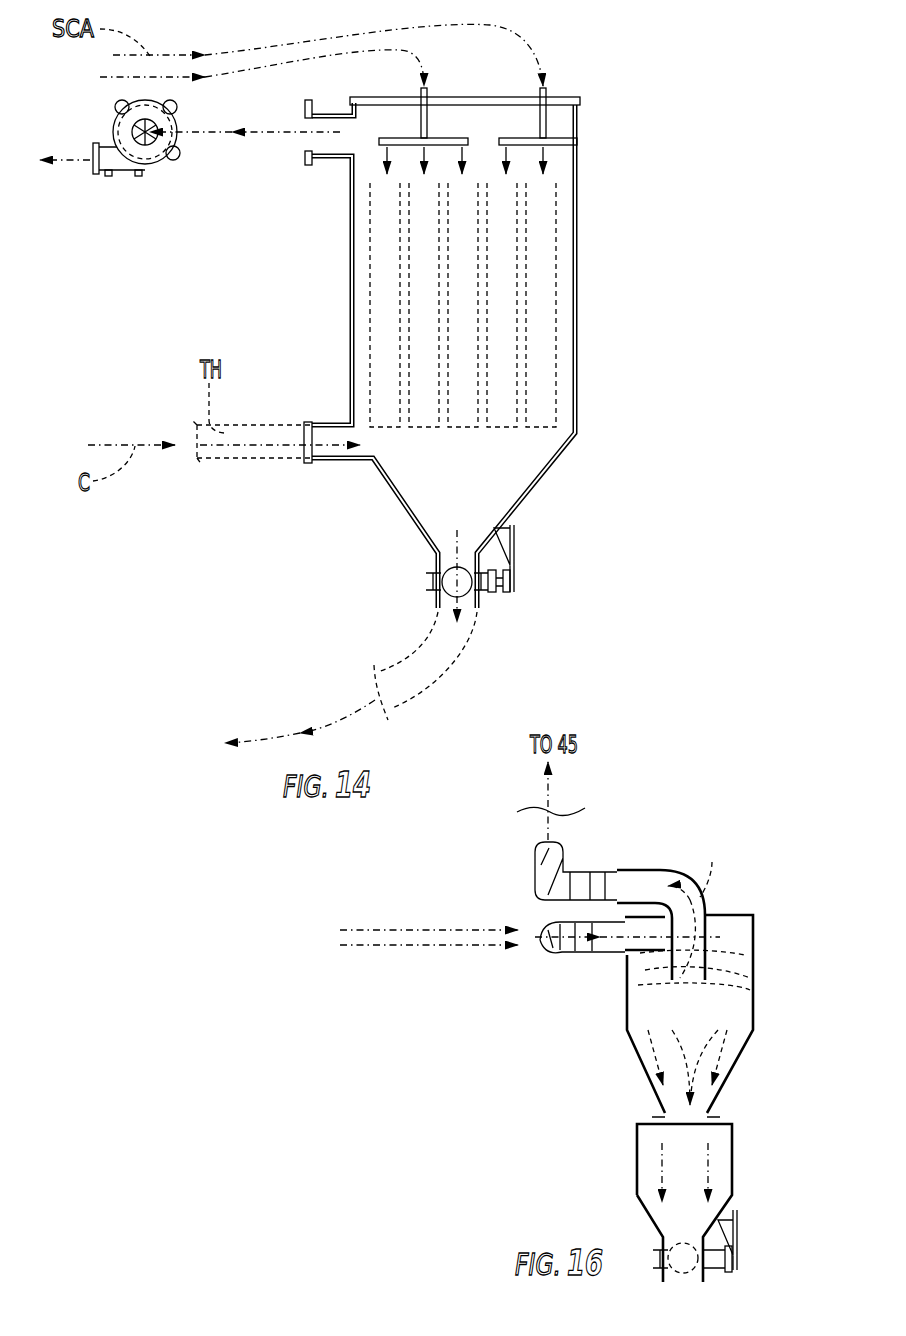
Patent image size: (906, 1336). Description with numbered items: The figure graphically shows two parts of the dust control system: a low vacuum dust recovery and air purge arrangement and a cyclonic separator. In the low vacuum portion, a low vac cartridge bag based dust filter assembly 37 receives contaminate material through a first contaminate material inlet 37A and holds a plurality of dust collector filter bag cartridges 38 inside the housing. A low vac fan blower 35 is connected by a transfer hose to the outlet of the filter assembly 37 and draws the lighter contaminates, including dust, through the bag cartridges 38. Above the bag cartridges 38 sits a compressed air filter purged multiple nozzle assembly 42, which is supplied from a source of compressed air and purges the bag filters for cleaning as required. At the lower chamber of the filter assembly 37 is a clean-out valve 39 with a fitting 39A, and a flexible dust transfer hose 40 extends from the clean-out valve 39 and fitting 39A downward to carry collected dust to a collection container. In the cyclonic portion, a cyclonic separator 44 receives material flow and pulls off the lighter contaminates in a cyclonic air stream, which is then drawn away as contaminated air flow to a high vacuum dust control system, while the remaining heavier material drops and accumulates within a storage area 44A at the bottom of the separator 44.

In FIG. 14, the low vac fan blower 35 is at (160, 168).
In FIG. 14, the low vac cartridge bag based dust filter assembly 37 is at (326, 247).
In FIG. 14, the first contaminate material inlet 37A is at (336, 453).
In FIG. 14, the dust collector filter bag cartridges 38 is at (382, 347).
In FIG. 14, the lower chamber clean-out valve 39 is at (428, 580).
In FIG. 14, the fitting 39A is at (482, 601).
In FIG. 14, the flexible dust transfer hose 40 is at (445, 668).
In FIG. 14, the compressed air filter purged multiple nozzle assembly 42 is at (560, 134).
In FIG. 16, the cyclonic separator 44 is at (608, 996).
In FIG. 16, the storage area 44A is at (645, 1145).